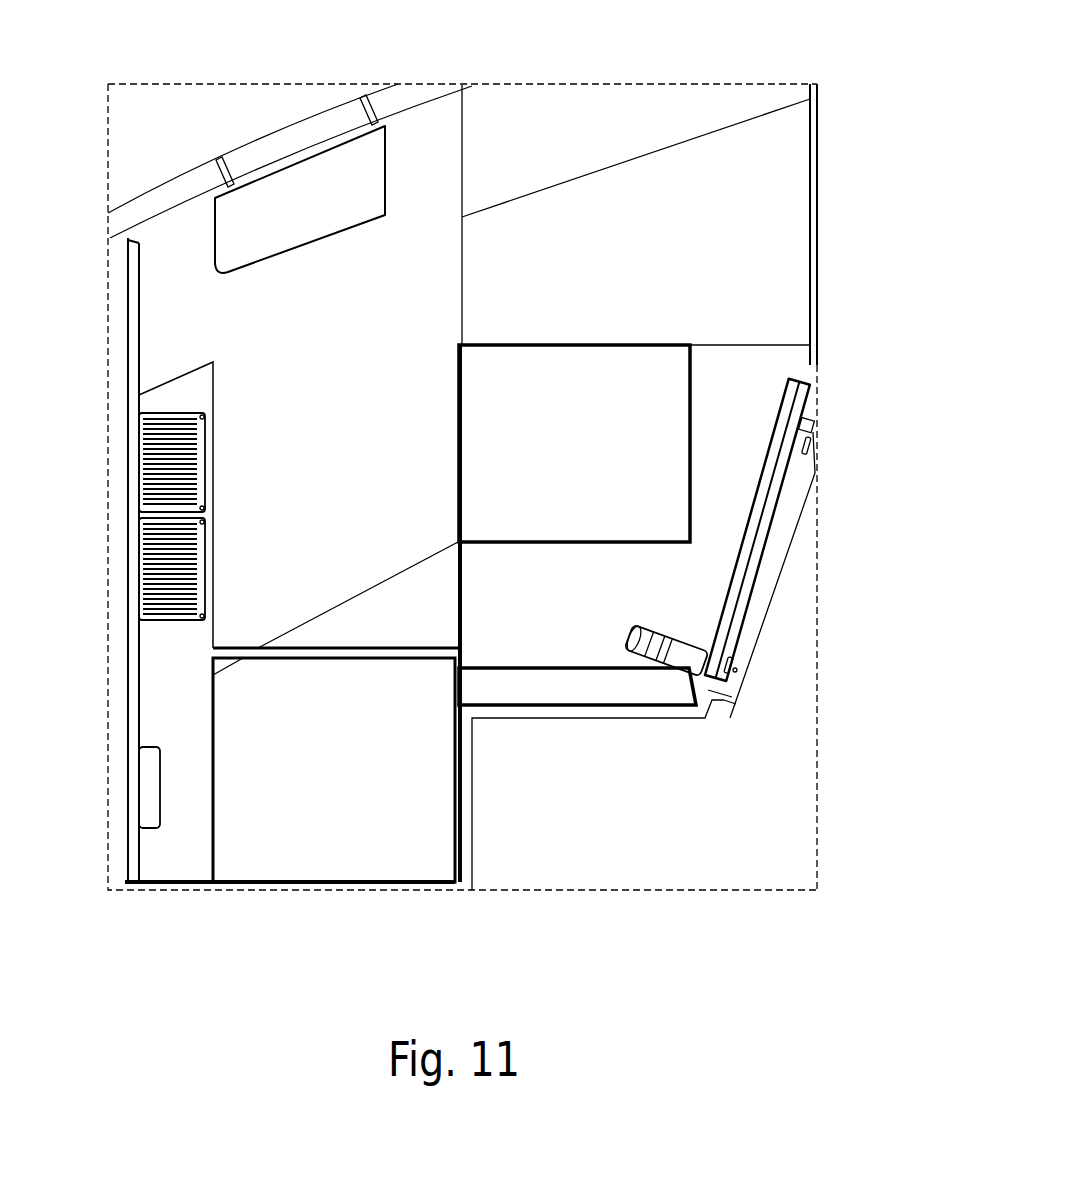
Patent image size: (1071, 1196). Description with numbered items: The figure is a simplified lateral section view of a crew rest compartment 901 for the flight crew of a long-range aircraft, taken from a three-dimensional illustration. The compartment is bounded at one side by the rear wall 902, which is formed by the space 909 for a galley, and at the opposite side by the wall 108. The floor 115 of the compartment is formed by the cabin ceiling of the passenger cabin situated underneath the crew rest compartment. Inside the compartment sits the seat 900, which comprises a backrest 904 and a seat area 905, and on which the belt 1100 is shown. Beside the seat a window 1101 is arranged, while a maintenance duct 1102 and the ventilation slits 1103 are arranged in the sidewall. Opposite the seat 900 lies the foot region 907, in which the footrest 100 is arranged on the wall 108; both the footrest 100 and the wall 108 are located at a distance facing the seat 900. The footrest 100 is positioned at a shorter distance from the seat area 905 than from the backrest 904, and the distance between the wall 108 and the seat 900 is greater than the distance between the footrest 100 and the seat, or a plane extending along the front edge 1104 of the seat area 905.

The footrest 100 is at (178, 786).
The wall 108 is at (127, 700).
The floor 115 is at (318, 900).
The seat 900 is at (538, 564).
The crew rest compartment 901 is at (828, 84).
The rear wall 902 is at (819, 582).
The backrest 904 is at (745, 540).
The seat area 905 is at (530, 683).
The foot region 907 is at (385, 826).
The space for a galley 909 is at (746, 880).
The belt 1100 is at (658, 625).
The window 1101 is at (653, 374).
The maintenance duct 1102 is at (330, 244).
The ventilation slits 1103 is at (211, 414).
The front edge 1104 is at (434, 679).